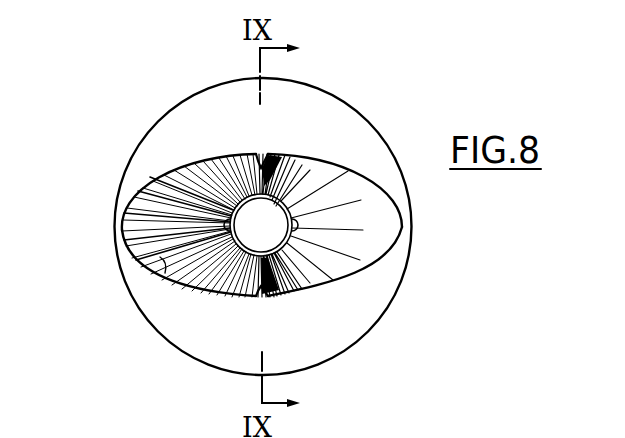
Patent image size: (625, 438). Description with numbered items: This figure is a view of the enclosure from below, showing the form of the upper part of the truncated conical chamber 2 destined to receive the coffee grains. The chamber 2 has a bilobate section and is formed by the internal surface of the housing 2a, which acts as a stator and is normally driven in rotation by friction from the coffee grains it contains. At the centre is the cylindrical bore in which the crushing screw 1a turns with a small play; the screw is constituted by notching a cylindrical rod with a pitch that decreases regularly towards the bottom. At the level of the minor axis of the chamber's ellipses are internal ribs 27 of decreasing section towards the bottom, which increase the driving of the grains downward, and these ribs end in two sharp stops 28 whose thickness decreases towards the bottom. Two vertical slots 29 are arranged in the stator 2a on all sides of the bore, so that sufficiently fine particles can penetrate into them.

The crushing screw 1a is at (256, 294).
The truncated conical chamber 2 is at (263, 232).
The housing 2a is at (138, 178).
The internal ribs 27 is at (259, 160).
The sharp stops 28 is at (302, 166).
The vertical slots 29 is at (124, 238).